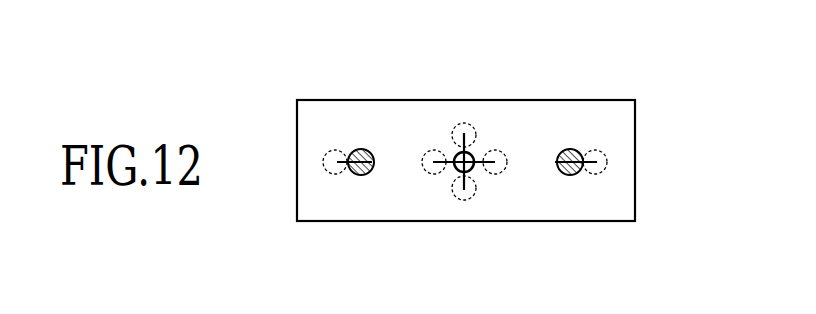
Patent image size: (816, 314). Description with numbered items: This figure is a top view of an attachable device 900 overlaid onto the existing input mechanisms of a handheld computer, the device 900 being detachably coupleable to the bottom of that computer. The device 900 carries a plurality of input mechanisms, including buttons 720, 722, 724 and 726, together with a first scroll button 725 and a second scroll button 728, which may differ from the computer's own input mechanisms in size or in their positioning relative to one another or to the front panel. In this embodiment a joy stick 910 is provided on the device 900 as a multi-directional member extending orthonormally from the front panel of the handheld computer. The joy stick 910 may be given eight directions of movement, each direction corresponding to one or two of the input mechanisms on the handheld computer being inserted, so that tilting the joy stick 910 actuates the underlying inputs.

The device 900 is at (648, 62).
The button 720 is at (338, 150).
The button 722 is at (432, 174).
The button 724 is at (501, 173).
The first scroll button 725 is at (457, 125).
The button 726 is at (570, 146).
The second scroll button 728 is at (465, 200).
The joy stick 910 is at (477, 151).